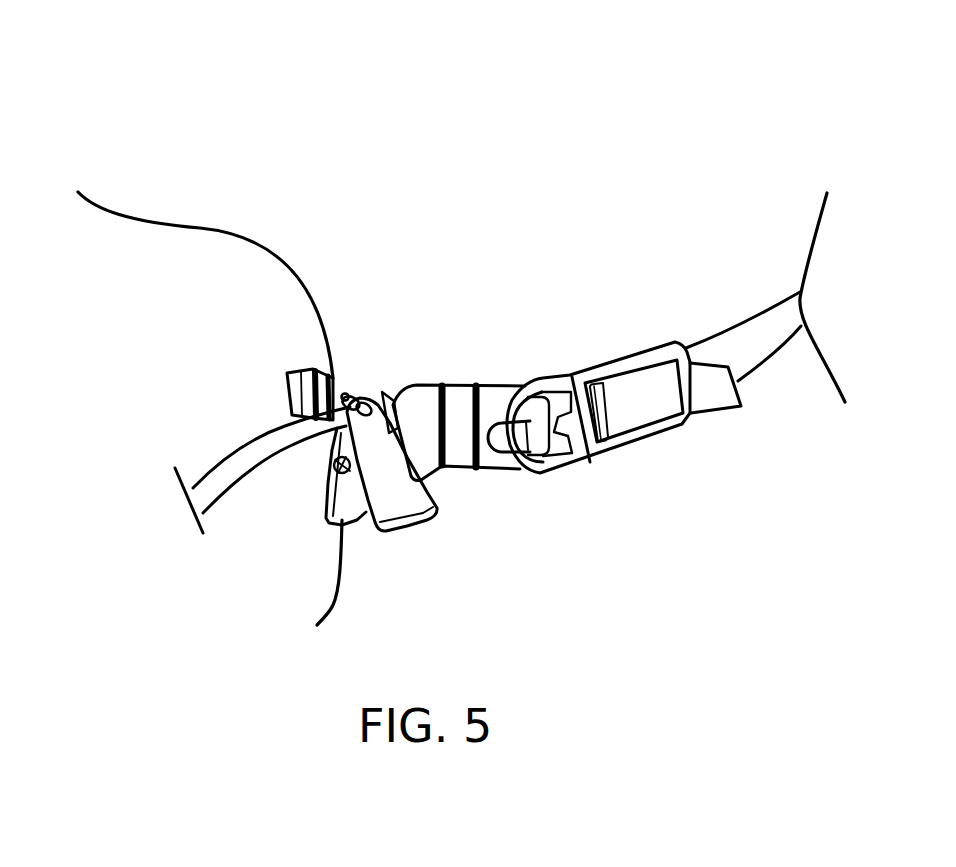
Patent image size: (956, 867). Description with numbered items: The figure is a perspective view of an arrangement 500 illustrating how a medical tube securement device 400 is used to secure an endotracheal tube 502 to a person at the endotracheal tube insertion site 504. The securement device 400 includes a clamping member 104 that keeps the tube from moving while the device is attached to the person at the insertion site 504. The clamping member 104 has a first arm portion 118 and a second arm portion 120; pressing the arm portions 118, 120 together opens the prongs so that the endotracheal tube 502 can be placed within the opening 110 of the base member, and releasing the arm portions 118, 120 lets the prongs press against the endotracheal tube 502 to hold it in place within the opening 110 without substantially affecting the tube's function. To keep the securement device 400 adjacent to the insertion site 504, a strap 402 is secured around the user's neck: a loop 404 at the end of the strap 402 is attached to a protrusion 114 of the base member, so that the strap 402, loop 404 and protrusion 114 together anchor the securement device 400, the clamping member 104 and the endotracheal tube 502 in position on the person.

The wearable system on user 500 is at (100, 55).
The endotracheal tube 502 is at (270, 428).
The opening 110 is at (383, 397).
The clamping member 104 is at (353, 506).
The first arm portion 118 is at (327, 518).
The second arm portion 120 is at (420, 520).
The endotracheal tube insertion site 504 is at (390, 355).
The medical tube securement device 400 is at (613, 400).
The loop 404 is at (541, 382).
The protrusion 114 is at (490, 423).
The strap 402 is at (743, 320).